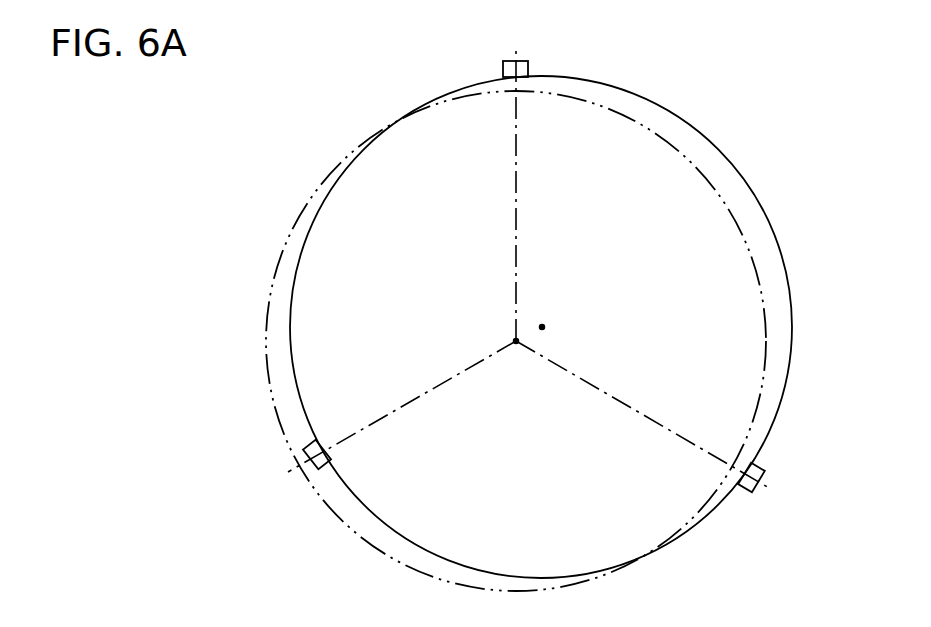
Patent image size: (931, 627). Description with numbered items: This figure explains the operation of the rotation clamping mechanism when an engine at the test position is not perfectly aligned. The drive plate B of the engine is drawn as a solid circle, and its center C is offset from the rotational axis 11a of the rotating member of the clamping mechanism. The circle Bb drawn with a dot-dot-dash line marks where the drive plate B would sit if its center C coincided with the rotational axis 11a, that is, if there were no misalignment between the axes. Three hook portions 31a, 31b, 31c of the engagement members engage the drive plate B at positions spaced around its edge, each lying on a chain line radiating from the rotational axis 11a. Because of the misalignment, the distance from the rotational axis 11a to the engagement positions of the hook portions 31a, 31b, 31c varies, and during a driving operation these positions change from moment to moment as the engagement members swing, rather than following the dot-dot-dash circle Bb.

The drive plate B is at (754, 191).
The circle drawn with a dot-dot-dash line Bb is at (307, 206).
The center of the drive plate C is at (544, 326).
The rotational axis 11a is at (514, 339).
The hook portion 31a is at (503, 67).
The hook portion 31b is at (742, 491).
The hook portion 31c is at (312, 447).